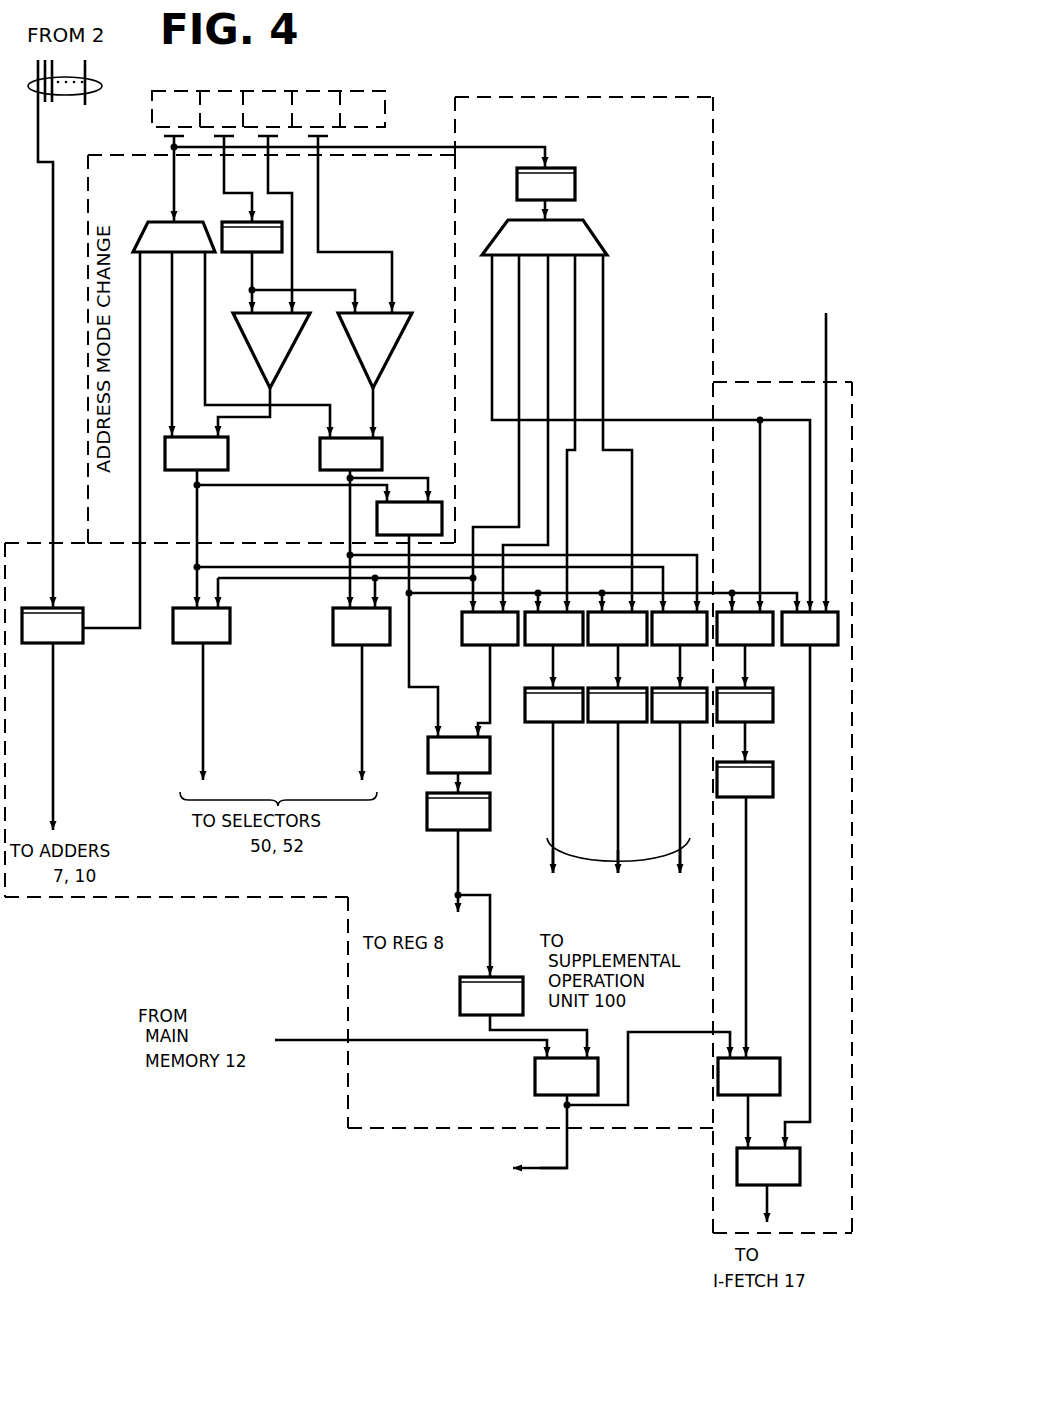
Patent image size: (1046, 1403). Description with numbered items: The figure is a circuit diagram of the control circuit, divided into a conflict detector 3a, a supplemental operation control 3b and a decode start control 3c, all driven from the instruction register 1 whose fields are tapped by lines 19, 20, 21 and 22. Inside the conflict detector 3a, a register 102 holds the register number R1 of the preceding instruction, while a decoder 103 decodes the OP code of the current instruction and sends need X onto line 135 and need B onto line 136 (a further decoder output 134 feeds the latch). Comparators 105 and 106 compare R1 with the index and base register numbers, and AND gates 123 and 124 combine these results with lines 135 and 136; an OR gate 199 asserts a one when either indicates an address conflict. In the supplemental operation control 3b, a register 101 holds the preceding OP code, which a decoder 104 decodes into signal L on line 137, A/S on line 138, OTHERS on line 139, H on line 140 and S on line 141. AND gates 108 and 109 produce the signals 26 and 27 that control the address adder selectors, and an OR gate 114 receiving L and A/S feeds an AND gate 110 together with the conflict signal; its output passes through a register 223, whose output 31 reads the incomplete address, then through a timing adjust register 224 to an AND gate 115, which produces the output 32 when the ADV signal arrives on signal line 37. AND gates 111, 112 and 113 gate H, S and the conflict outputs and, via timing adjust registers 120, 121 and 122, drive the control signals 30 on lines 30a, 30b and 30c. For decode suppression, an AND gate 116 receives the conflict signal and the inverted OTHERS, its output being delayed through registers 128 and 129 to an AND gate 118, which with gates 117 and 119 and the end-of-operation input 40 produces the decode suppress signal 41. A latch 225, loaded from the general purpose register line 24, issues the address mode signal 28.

The instruction register 1 is at (385, 112).
The conflict detector 3a is at (432, 150).
The supplemental operation control logic 3b is at (728, 48).
The decode start control 3c is at (703, 1203).
The operation code signal line 19 is at (170, 147).
The R1 field signal line 20 is at (224, 150).
The X field signal line 21 is at (268, 150).
The B field signal line 22 is at (318, 150).
The output line of the general purpose registers 24 is at (98, 90).
The selector control signal 26 is at (205, 670).
The selector control signal 27 is at (363, 692).
The output signal of the latch 28 is at (53, 733).
The supplemental operation control signal lines 30 is at (547, 842).
The control signal line 30a is at (555, 865).
The control signal line 30b is at (622, 865).
The control signal line 30c is at (690, 840).
The output signal of the register 31 is at (452, 850).
The output of the AND gate 32 is at (538, 1172).
The signal line 37 is at (310, 1042).
The end of operation signal line 40 is at (826, 350).
The decode suppress signal 41 is at (767, 1195).
The register 101 is at (575, 188).
The register 102 is at (282, 237).
The decoder 103 is at (140, 232).
The decoder 104 is at (598, 242).
The comparator 105 is at (300, 333).
The comparator 106 is at (403, 333).
The AND gate 108 is at (230, 627).
The AND gate 109 is at (333, 627).
The AND gate 110 is at (428, 762).
The AND gate 111 is at (540, 648).
The AND gate 112 is at (603, 648).
The AND gate 113 is at (667, 648).
The OR gate 114 is at (468, 648).
The AND gate 115 is at (535, 1080).
The AND gate 116 is at (750, 648).
The AND gate 117 is at (800, 605).
The AND gate 118 is at (718, 1080).
The OR gate 119 is at (818, 1155).
The timing adjust register 120 is at (525, 700).
The timing adjust register 121 is at (600, 722).
The timing adjust register 122 is at (680, 722).
The AND gate 123 is at (228, 453).
The AND gate 124 is at (382, 453).
The register 128 is at (748, 724).
The register 129 is at (773, 780).
The decoder output line 134 is at (140, 488).
The line 135 is at (172, 402).
The line 136 is at (208, 348).
The line 137 is at (519, 380).
The line 138 is at (548, 357).
The line 139 is at (492, 408).
The line 140 is at (578, 332).
The line 141 is at (603, 290).
The OR gate 199 is at (442, 512).
The register 223 is at (478, 833).
The timing adjust register 224 is at (460, 995).
The latch 225 is at (87, 616).